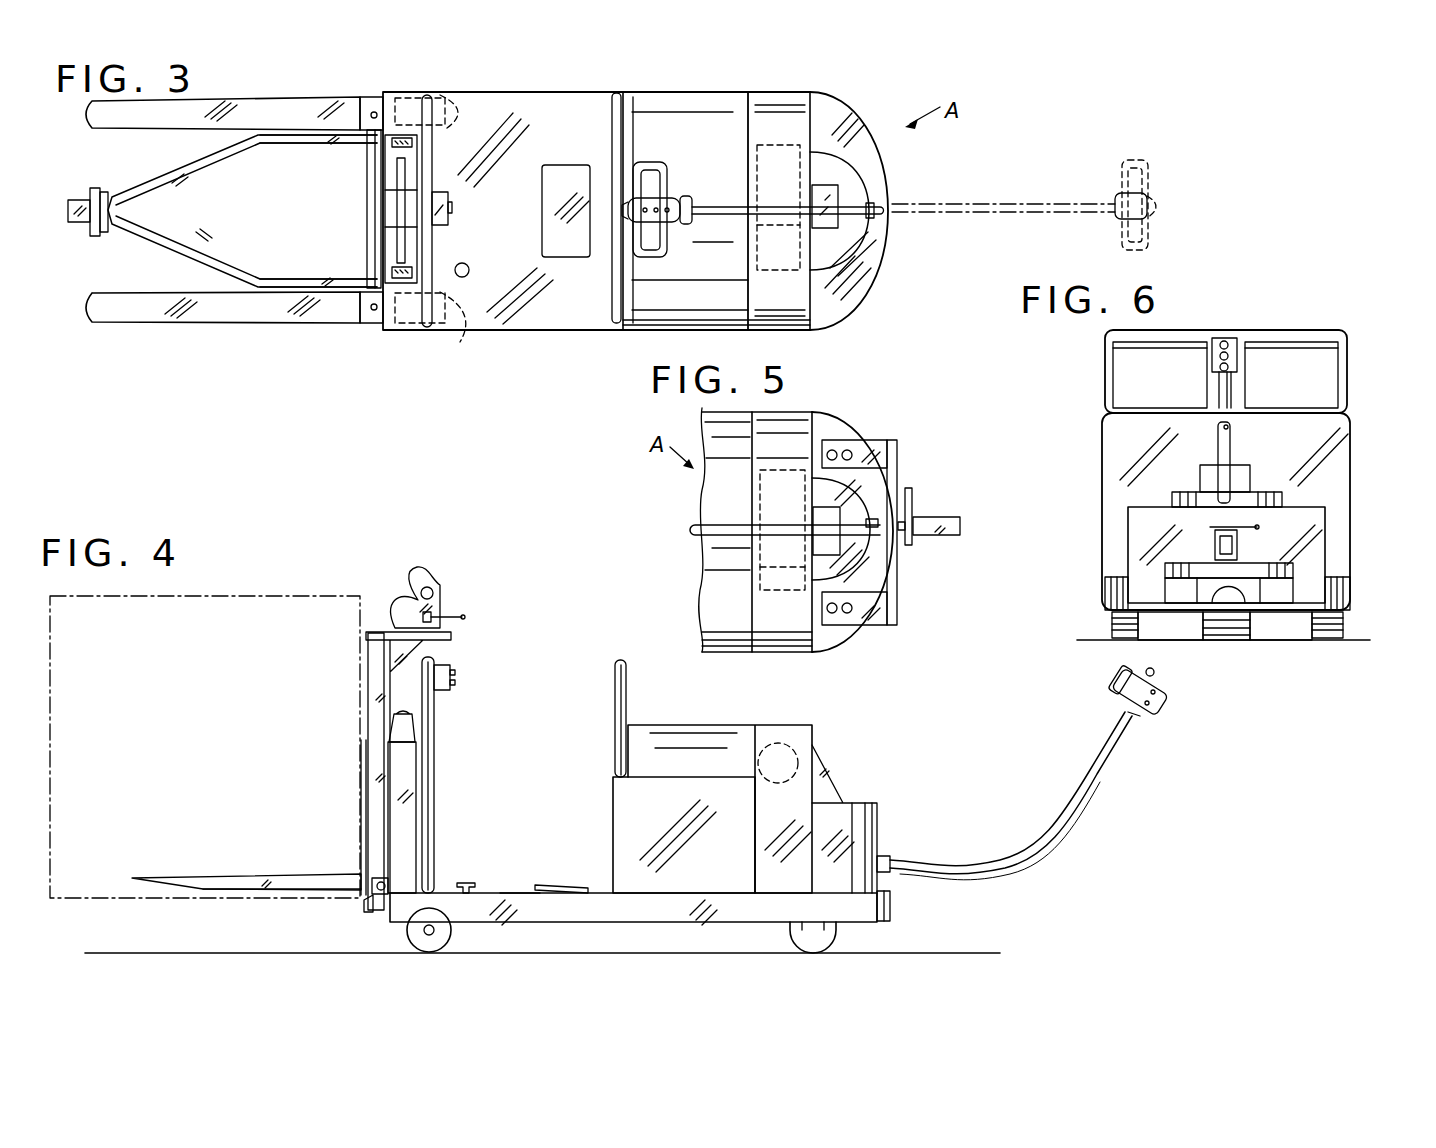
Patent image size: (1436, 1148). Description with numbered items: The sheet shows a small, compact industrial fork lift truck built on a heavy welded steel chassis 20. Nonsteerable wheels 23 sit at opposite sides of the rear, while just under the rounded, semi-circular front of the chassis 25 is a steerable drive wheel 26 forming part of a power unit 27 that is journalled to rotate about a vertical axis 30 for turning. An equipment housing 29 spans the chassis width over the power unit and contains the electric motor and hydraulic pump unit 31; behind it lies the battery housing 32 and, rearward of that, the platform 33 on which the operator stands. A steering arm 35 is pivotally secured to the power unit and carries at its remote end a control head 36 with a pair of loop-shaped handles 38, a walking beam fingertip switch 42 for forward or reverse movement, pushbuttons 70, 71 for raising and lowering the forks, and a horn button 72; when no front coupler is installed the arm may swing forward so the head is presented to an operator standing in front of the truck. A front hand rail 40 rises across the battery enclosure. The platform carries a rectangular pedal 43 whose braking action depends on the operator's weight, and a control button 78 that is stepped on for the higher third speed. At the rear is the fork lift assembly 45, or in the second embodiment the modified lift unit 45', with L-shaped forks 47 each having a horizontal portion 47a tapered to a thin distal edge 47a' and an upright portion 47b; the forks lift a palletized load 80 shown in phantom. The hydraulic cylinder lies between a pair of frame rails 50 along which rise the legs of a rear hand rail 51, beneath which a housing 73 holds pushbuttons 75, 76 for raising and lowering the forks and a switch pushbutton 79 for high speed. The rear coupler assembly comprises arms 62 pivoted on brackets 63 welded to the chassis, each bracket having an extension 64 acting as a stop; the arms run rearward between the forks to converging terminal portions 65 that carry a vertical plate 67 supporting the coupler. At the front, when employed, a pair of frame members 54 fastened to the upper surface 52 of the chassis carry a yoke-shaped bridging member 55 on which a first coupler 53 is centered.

In FIG. 3, the chassis 20 is at (611, 92).
In FIG. 4, the chassis 20 is at (595, 922).
In FIG. 3, the nonsteerable wheels 23 is at (453, 100).
In FIG. 6, the nonsteerable wheels 23 is at (1112, 625).
In FIG. 4, the nonsteerable wheels 23 is at (447, 950).
In FIG. 3, the front of the chassis 25 is at (847, 112).
In FIG. 5, the front of the chassis 25 is at (842, 437).
In FIG. 6, the front of the chassis 25 is at (1258, 598).
In FIG. 4, the front of the chassis 25 is at (892, 903).
In FIG. 6, the steerable drive wheel 26 is at (1203, 625).
In FIG. 4, the steerable drive wheel 26 is at (840, 925).
In FIG. 3, the power unit 27 is at (866, 182).
In FIG. 5, the power unit 27 is at (870, 505).
In FIG. 4, the power unit 27 is at (858, 803).
In FIG. 3, the equipment housing 29 is at (800, 92).
In FIG. 5, the equipment housing 29 is at (792, 425).
In FIG. 4, the equipment housing 29 is at (814, 728).
In FIG. 3, the vertical axis 30 is at (845, 258).
In FIG. 3, the electric motor and hydraulic pump unit 31 is at (772, 130).
In FIG. 4, the electric motor and hydraulic pump unit 31 is at (812, 737).
In FIG. 3, the battery housing 32 is at (690, 92).
In FIG. 5, the battery housing 32 is at (702, 412).
In FIG. 4, the battery housing 32 is at (613, 805).
In FIG. 4, the platform 33 is at (508, 890).
In FIG. 3, the steering arm 35 is at (758, 206).
In FIG. 5, the steering arm 35 is at (700, 537).
In FIG. 6, the steering arm 35 is at (1232, 450).
In FIG. 4, the steering arm 35 is at (1057, 818).
In FIG. 3, the control head 36 is at (683, 198).
In FIG. 4, the control head 36 is at (1158, 690).
In FIG. 3, the loop-shaped handles 38 is at (662, 163).
In FIG. 3, the front hand rail 40 is at (612, 92).
In FIG. 6, the front hand rail 40 is at (1315, 332).
In FIG. 4, the front hand rail 40 is at (626, 700).
In FIG. 4, the walking beam fingertip switch 42 is at (1152, 672).
In FIG. 3, the pedal 43 is at (563, 168).
In FIG. 4, the pedal 43 is at (552, 882).
In FIG. 3, the fork lift assembly 45 is at (225, 213).
In FIG. 4, the modified hydraulic lift unit 45' is at (284, 794).
In FIG. 3, the forks 47 is at (218, 100).
In FIG. 4, the horizontal portion 47a is at (269, 923).
In FIG. 4, the thin distal edge 47a' is at (239, 855).
In FIG. 4, the upright portion 47b is at (361, 826).
In FIG. 3, the frame rails 50 is at (405, 128).
In FIG. 3, the rear hand rail 51 is at (350, 209).
In FIG. 6, the rear hand rail 51 is at (1280, 330).
In FIG. 3, the upper surface of the front of the truck 52 is at (868, 243).
In FIG. 5, the upper surface of the front of the truck 52 is at (870, 560).
In FIG. 6, the upper surface of the front of the truck 52 is at (1340, 575).
In FIG. 5, the first coupler 53 is at (950, 536).
In FIG. 6, the first coupler 53 is at (1240, 545).
In FIG. 5, the frame members 54 is at (870, 442).
In FIG. 5, the bridging member 55 is at (898, 462).
In FIG. 6, the bridging member 55 is at (1327, 540).
In FIG. 3, the arms 62 is at (318, 148).
In FIG. 3, the brackets 63 is at (376, 76).
In FIG. 4, the brackets 63 is at (361, 898).
In FIG. 4, the extension 64 is at (366, 910).
In FIG. 3, the converging terminal portions 65 is at (170, 235).
In FIG. 3, the vertical plate 67 is at (97, 188).
In FIG. 3, the pushbutton 70 is at (652, 252).
In FIG. 4, the pushbutton 70 is at (1155, 698).
In FIG. 3, the pushbutton 71 is at (670, 224).
In FIG. 4, the pushbutton 71 is at (1150, 720).
In FIG. 3, the horn button 72 is at (665, 198).
In FIG. 4, the horn button 72 is at (1142, 716).
In FIG. 3, the housing 73 is at (440, 190).
In FIG. 6, the housing 73 is at (1212, 355).
In FIG. 4, the housing 73 is at (452, 690).
In FIG. 6, the pushbutton 75 is at (1232, 338).
In FIG. 4, the pushbutton 75 is at (440, 660).
In FIG. 6, the pushbutton 76 is at (1237, 352).
In FIG. 4, the pushbutton 76 is at (455, 672).
In FIG. 3, the control button 78 is at (470, 270).
In FIG. 4, the control button 78 is at (466, 880).
In FIG. 6, the switch pushbutton 79 is at (1237, 365).
In FIG. 4, the switch pushbutton 79 is at (455, 683).
In FIG. 4, the palletized load 80 is at (306, 588).